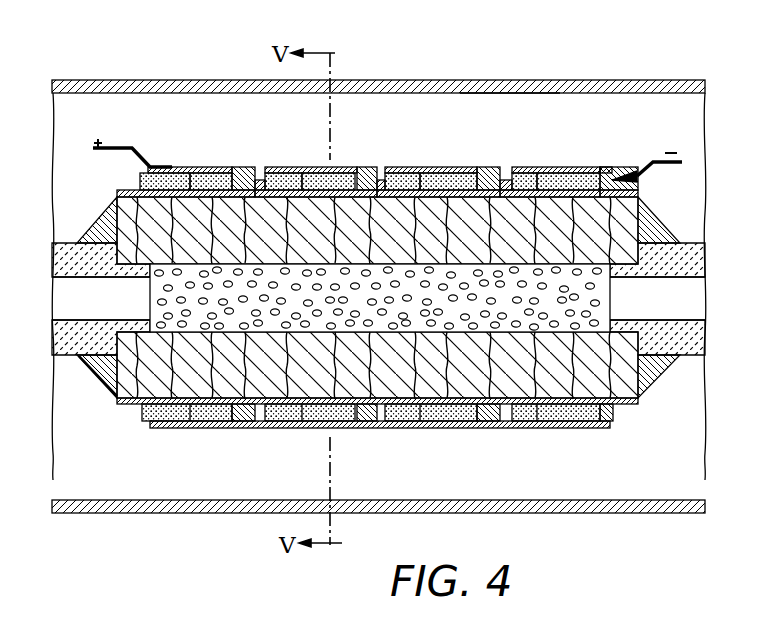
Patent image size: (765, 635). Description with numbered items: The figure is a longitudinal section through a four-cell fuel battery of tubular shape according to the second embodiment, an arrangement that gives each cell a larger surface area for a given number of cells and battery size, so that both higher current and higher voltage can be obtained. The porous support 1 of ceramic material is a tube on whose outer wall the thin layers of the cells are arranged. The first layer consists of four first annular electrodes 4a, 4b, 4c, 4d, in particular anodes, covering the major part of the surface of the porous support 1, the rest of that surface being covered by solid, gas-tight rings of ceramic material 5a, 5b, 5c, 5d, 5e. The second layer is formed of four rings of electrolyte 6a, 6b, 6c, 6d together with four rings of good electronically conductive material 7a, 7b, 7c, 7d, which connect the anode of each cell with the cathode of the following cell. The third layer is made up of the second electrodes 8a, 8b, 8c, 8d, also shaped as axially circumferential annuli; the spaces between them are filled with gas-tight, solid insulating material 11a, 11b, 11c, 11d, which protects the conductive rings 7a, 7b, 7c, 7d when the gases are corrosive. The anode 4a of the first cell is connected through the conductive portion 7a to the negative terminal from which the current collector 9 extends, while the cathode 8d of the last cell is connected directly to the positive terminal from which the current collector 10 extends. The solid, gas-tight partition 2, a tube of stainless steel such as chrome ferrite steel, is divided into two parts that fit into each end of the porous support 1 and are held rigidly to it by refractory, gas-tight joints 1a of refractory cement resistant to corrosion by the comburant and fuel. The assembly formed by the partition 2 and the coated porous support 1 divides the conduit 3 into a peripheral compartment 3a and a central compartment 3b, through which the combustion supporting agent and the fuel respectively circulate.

The porous support 1 is at (442, 392).
The refractory gas-tight joint 1a is at (105, 384).
The solid gas-tight partition 2 is at (99, 322).
The conduit 3 is at (410, 80).
The peripheral compartment 3a is at (506, 102).
The central compartment 3b is at (70, 356).
The first annular electrode 4a is at (532, 172).
The first annular electrode 4b is at (419, 172).
The first annular electrode 4c is at (303, 172).
The first annular electrode 4d is at (185, 172).
The gas-tight ceramic ring 5a is at (640, 193).
The gas-tight ceramic ring 5b is at (520, 190).
The gas-tight ceramic ring 5c is at (404, 190).
The gas-tight ceramic ring 5d is at (284, 190).
The gas-tight ceramic ring 5e is at (117, 193).
The electrolyte ring 6a is at (569, 177).
The electrolyte ring 6b is at (456, 177).
The electrolyte ring 6c is at (345, 177).
The electrolyte ring 6d is at (222, 177).
The electron conductive ring 7a is at (621, 172).
The electron conductive ring 7b is at (489, 175).
The electron conductive ring 7c is at (368, 175).
The electron conductive ring 7d is at (244, 175).
The second electrode 8a is at (555, 167).
The second electrode 8b is at (446, 167).
The second electrode 8c is at (342, 167).
The second electrode 8d is at (205, 167).
The current collector 9 is at (657, 157).
The current collector 10 is at (118, 148).
The insulating filler 11a is at (602, 167).
The insulating filler 11b is at (502, 167).
The insulating filler 11c is at (378, 167).
The insulating filler 11d is at (244, 167).